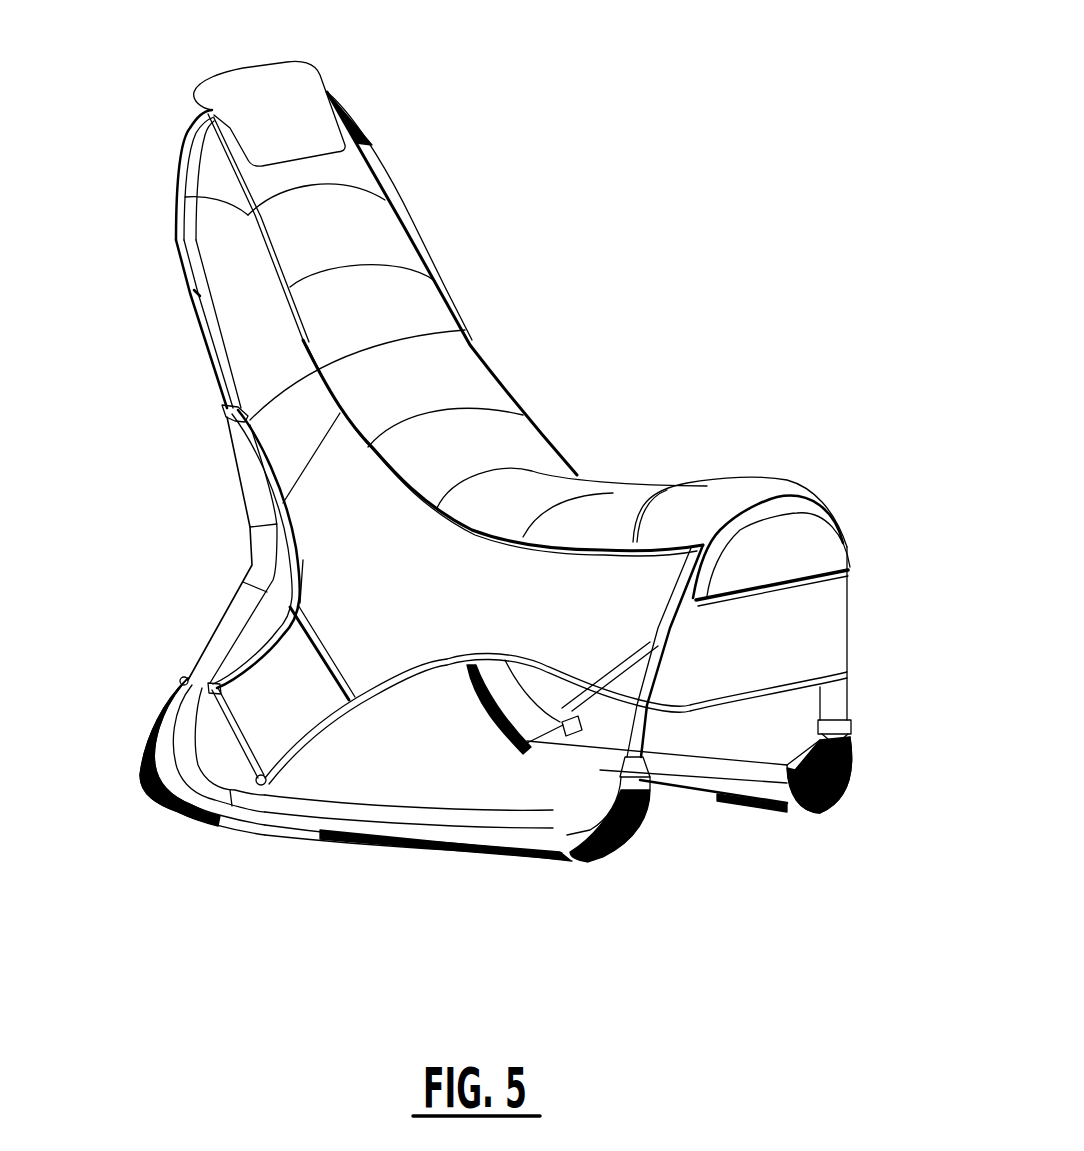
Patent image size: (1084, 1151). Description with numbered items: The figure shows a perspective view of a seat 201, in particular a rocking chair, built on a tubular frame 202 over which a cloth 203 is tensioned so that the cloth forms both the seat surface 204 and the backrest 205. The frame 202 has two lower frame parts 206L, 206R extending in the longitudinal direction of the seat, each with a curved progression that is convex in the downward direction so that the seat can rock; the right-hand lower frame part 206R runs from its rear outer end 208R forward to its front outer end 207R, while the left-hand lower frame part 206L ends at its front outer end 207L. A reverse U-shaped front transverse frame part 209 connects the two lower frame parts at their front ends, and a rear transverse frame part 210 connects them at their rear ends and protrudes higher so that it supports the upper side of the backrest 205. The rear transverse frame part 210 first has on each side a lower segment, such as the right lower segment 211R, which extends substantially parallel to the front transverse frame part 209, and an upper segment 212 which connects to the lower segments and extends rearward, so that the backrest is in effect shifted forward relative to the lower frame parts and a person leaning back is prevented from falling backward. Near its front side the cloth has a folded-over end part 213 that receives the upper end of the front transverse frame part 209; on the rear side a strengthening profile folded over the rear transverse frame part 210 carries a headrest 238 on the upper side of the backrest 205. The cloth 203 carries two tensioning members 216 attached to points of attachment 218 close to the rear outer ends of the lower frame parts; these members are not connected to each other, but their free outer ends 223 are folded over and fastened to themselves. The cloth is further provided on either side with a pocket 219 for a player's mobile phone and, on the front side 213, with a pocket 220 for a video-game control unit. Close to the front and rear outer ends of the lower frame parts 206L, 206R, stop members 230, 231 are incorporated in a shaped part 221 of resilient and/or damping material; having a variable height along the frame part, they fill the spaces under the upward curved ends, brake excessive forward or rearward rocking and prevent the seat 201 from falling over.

The seat 201 is at (633, 238).
The frame 202 is at (198, 557).
The cloth 203 is at (565, 416).
The seat surface 204 is at (618, 513).
The backrest 205 is at (370, 237).
The left-hand lower frame part 206L is at (688, 775).
The right-hand lower frame part 206R is at (407, 820).
The front outer end of left lower frame part 207L is at (793, 767).
The front outer end of right lower frame part 207R is at (580, 810).
The rear outer end of right lower frame part 208R is at (202, 775).
The front transverse frame part 209 is at (870, 678).
The rear transverse frame part 210 is at (219, 474).
The right lower segment of rear transverse frame part 211R is at (222, 640).
The upper segment of rear transverse frame part 212 is at (237, 453).
The folded-over front end part of cloth 213 is at (813, 540).
The tensioning member 216 is at (358, 677).
The point of attachment 218 is at (563, 723).
The pocket 219 is at (293, 707).
The pocket 220 is at (196, 292).
The shaped part 221 is at (454, 880).
The free outer end of tensioning member 223 is at (562, 687).
The stop member 230 is at (625, 872).
The stop member 231 is at (115, 750).
The headrest 238 is at (303, 103).